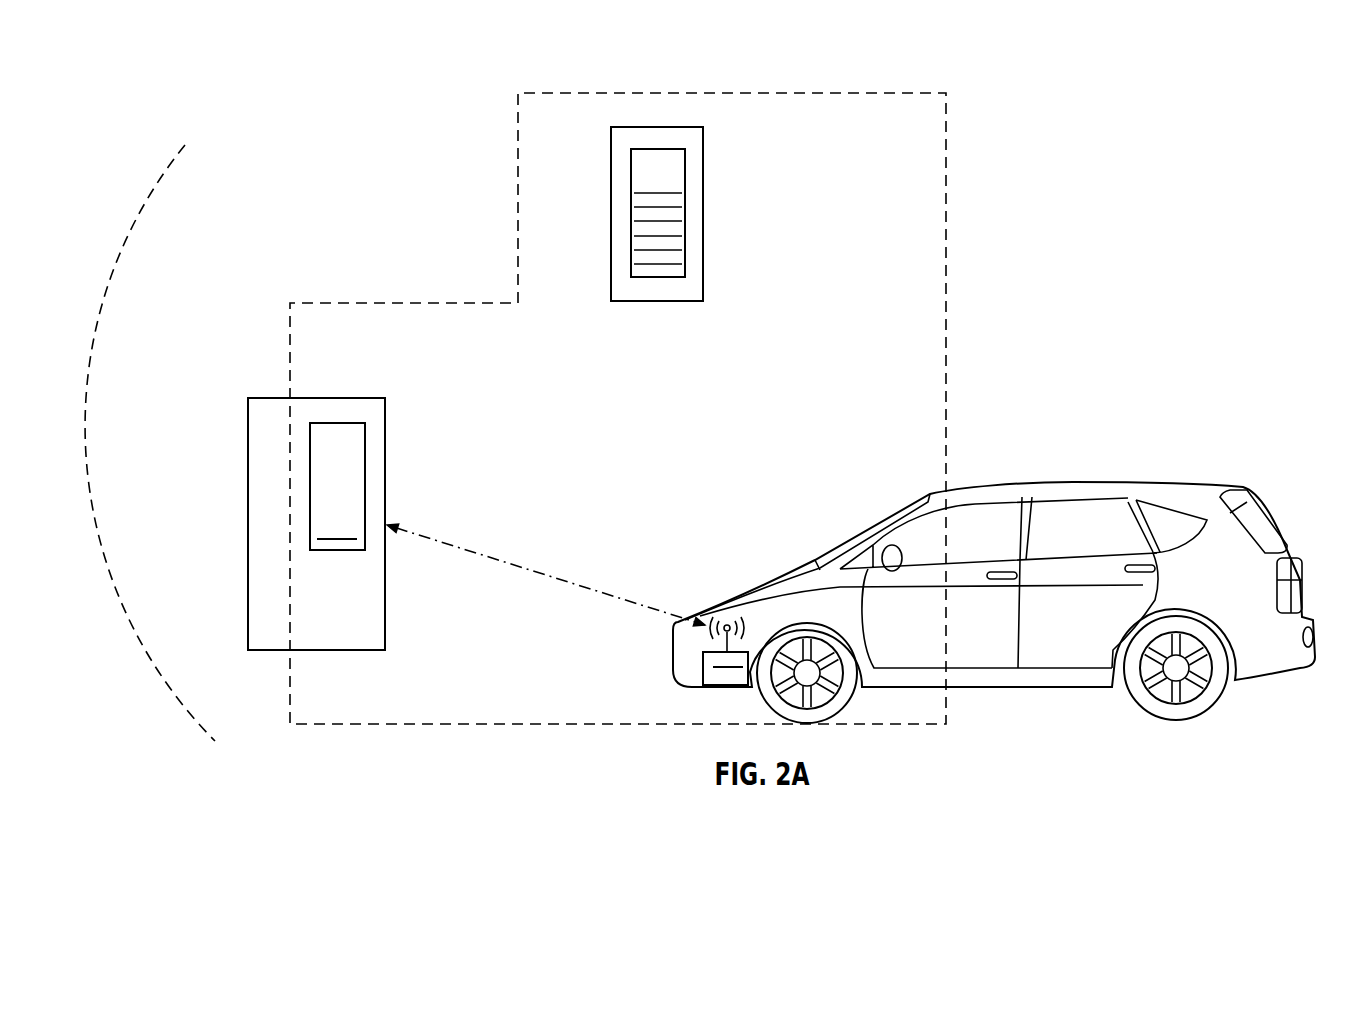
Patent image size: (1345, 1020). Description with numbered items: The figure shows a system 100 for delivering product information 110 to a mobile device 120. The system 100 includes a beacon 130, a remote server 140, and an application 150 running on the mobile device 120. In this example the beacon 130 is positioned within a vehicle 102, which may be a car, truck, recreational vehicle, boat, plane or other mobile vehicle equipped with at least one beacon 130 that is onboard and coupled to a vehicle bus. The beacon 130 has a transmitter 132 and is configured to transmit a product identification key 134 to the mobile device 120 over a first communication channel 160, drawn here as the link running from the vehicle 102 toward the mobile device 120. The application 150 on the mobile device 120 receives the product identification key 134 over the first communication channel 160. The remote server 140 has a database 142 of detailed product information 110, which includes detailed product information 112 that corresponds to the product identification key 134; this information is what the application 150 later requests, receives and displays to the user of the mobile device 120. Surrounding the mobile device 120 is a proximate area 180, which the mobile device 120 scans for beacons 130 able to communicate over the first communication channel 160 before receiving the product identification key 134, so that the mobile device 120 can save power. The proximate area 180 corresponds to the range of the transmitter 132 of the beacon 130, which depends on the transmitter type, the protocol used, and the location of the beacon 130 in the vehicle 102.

The system 100 is at (979, 80).
The vehicle 102 is at (1045, 482).
The product information 110 is at (648, 172).
The detailed product information 112 is at (642, 250).
The mobile device 120 is at (248, 437).
The beacon 130 is at (703, 658).
The transmitter 132 is at (727, 616).
The product identification key 134 is at (338, 432).
The remote server 140 is at (705, 175).
The database 142 is at (685, 250).
The application 150 is at (338, 551).
The first communication channel 160 is at (498, 560).
The proximate area 180 is at (243, 243).